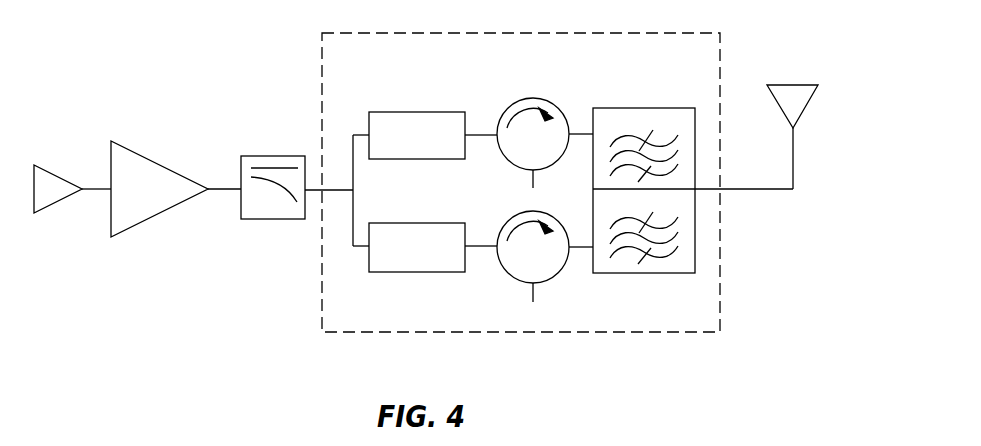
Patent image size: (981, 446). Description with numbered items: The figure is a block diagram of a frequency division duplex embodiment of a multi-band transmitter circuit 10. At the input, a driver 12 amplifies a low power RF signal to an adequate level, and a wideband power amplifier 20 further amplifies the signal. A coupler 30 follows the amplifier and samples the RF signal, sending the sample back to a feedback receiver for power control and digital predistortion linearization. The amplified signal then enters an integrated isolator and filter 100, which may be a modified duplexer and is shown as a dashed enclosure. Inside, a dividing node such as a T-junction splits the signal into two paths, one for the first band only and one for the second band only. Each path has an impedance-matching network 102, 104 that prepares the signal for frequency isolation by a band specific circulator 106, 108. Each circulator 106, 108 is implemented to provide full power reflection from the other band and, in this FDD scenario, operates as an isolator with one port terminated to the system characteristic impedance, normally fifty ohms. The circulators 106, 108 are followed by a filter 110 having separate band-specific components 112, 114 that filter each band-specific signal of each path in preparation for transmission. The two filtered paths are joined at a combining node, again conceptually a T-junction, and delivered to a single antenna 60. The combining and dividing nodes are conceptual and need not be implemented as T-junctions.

The multi-band transmitter circuit 10 is at (146, 51).
The driver 12 is at (58, 161).
The wideband power amplifier 20 is at (159, 178).
The coupler 30 is at (272, 164).
The antenna 60 is at (794, 114).
The integrated isolator and filter 100 is at (696, 65).
The impedance-matching network 102 is at (430, 155).
The impedance-matching network 104 is at (430, 266).
The band specific circulator 106 is at (548, 155).
The band specific circulator 108 is at (548, 268).
The filter 110 is at (700, 99).
The band-specific component 112 is at (688, 133).
The band-specific component 114 is at (688, 216).